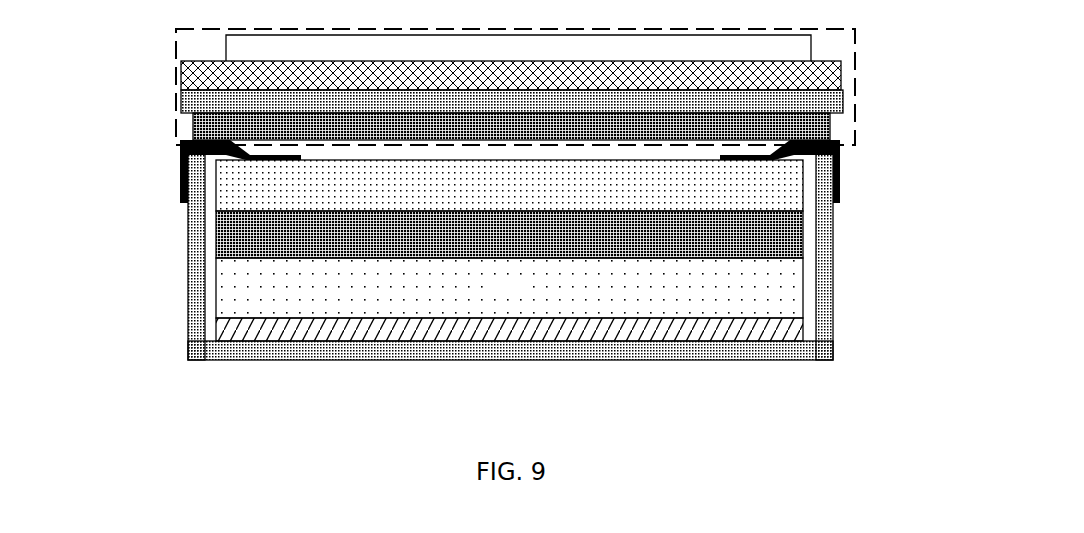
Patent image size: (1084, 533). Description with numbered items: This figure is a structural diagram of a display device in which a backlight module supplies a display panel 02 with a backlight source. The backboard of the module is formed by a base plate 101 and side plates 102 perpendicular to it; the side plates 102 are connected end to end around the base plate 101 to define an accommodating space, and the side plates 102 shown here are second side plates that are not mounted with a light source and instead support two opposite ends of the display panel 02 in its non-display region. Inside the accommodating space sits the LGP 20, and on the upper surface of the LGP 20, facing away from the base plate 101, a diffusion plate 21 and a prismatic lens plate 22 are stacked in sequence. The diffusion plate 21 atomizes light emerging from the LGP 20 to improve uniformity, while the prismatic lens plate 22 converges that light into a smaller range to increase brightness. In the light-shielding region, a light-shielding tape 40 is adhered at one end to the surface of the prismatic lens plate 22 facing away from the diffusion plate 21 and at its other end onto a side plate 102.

The display panel 02 is at (843, 97).
The light-shielding tape 40 is at (172, 142).
The prismatic lens plate 22 is at (790, 180).
The diffusion plate 21 is at (790, 225).
The LGP 20 is at (790, 265).
The side plate 102 is at (190, 318).
The base plate 101 is at (478, 340).